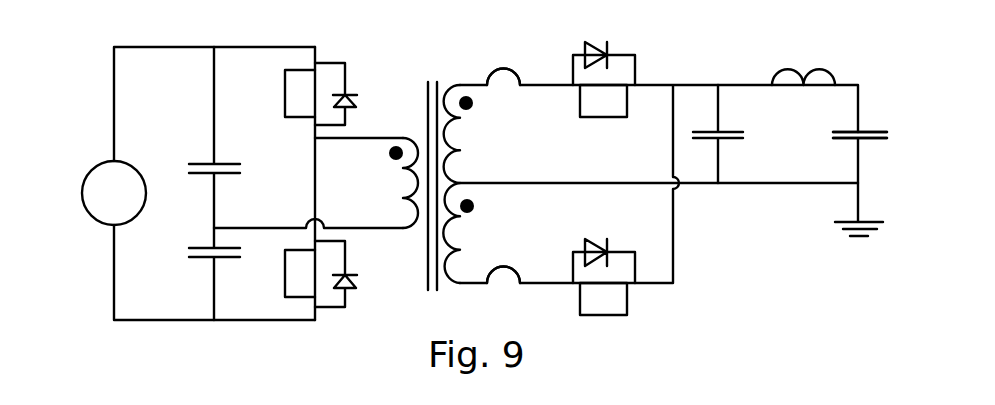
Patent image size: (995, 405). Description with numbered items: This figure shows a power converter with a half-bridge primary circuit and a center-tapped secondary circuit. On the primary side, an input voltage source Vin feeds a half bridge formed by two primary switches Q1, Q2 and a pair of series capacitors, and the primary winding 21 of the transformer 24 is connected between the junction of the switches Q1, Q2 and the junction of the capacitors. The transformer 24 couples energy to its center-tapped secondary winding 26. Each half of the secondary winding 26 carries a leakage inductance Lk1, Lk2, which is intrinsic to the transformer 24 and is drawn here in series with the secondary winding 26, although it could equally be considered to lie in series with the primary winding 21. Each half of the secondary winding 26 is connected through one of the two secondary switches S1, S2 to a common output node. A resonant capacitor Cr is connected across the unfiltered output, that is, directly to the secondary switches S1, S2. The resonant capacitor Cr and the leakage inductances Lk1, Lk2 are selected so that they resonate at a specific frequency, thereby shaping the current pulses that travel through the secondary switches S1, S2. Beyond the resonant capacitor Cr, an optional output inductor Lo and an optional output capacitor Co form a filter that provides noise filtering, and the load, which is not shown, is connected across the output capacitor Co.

The primary winding 21 is at (397, 192).
The transformer 24 is at (428, 112).
The center-tapped secondary winding 26 is at (461, 177).
The input voltage source Vin is at (114, 193).
The primary switch Q1 is at (321, 94).
The primary switch Q2 is at (321, 274).
The leakage inductance Lk1 is at (503, 68).
The leakage inductance Lk2 is at (505, 266).
The secondary switch S1 is at (604, 79).
The secondary switch S2 is at (604, 277).
The resonant capacitor Cr is at (735, 131).
The output inductor Lo is at (788, 69).
The output capacitor Co is at (876, 130).